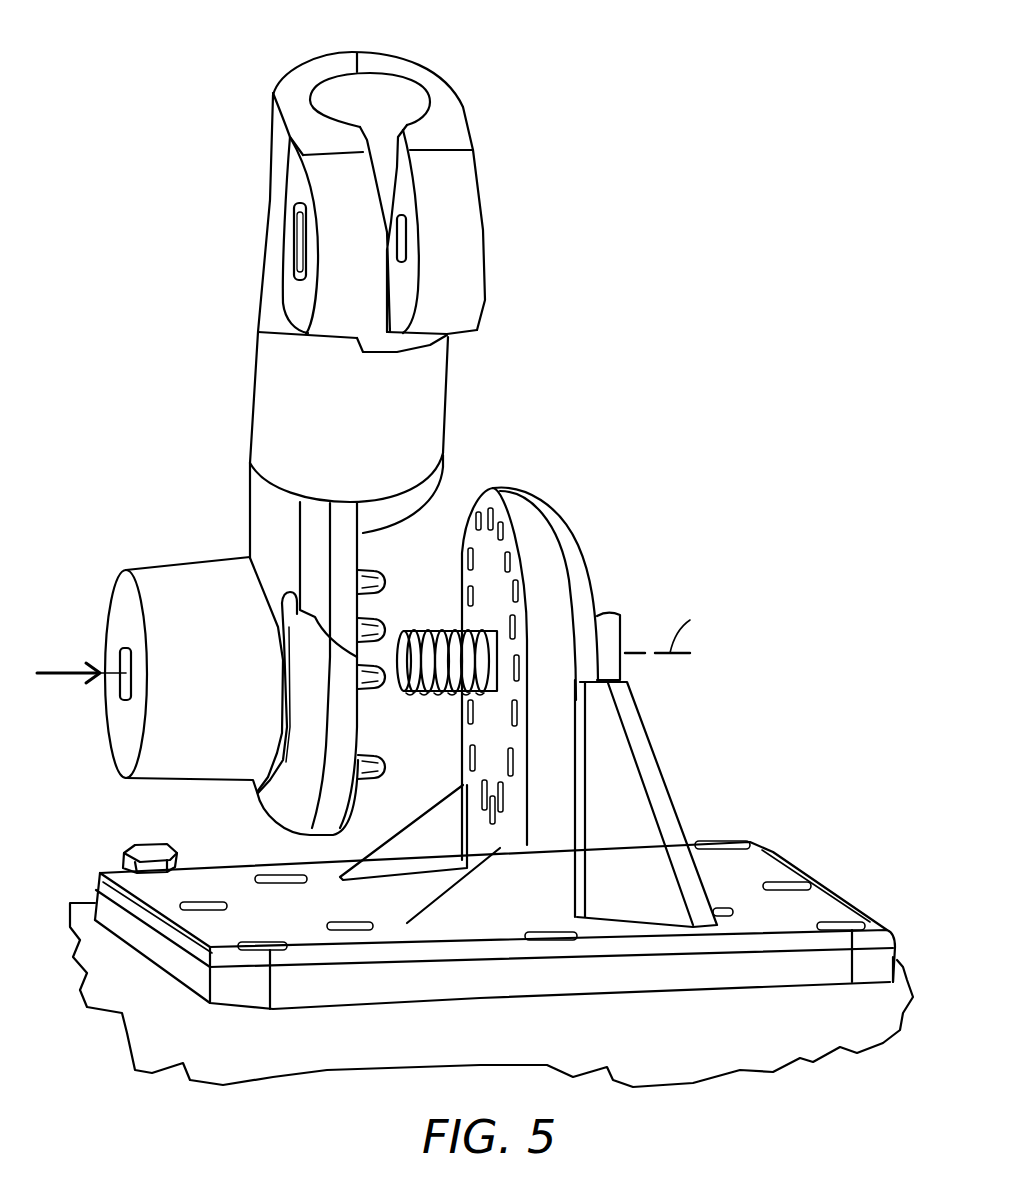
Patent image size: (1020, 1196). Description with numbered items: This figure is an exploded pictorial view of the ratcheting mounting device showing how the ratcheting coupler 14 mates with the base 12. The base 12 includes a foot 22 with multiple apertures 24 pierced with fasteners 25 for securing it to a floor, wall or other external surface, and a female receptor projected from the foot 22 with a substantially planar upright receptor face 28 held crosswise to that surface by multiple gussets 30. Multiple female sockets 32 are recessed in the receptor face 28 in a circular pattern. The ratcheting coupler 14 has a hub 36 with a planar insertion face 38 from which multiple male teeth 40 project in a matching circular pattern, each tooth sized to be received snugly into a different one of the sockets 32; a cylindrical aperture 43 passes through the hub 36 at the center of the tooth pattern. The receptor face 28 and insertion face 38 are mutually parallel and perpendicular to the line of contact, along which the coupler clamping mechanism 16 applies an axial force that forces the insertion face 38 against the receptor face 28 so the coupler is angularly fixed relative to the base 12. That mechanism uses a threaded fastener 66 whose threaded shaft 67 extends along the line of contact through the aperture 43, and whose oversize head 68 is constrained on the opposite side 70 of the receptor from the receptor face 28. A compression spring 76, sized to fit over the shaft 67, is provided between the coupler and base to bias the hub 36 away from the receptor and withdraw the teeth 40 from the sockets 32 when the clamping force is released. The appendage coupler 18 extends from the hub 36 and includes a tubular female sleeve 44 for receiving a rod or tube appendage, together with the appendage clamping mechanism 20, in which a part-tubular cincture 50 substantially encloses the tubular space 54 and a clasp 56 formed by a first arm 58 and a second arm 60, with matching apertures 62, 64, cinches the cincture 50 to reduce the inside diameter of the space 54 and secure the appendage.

The base 12 is at (700, 690).
The ratcheting coupler 14 is at (253, 512).
The coupler clamping mechanism 16 is at (90, 617).
The appendage coupler 18 is at (282, 155).
The appendage clamping mechanism 20 is at (205, 206).
The foot 22 is at (770, 867).
The apertures 24 is at (850, 921).
The fasteners 25 is at (132, 843).
The receptor face 28 is at (462, 597).
The gussets 30 is at (657, 777).
The female sockets 32 is at (460, 779).
The hub 36 is at (148, 564).
The insertion face 38 is at (363, 731).
The male teeth 40 is at (385, 773).
The aperture 43 is at (125, 688).
The tubular female sleeve 44 is at (432, 386).
The part-tubular cincture 50 is at (455, 90).
The tubular space 54 is at (372, 105).
The clasp 56 is at (523, 108).
The first arm 58 is at (296, 314).
The second arm 60 is at (480, 173).
The aperture 62 is at (294, 244).
The aperture 64 is at (406, 238).
The threaded fastener 66 is at (398, 685).
The threaded shaft 67 is at (412, 640).
The head 68 is at (613, 620).
The opposite side 70 is at (583, 540).
The compression spring 76 is at (420, 702).